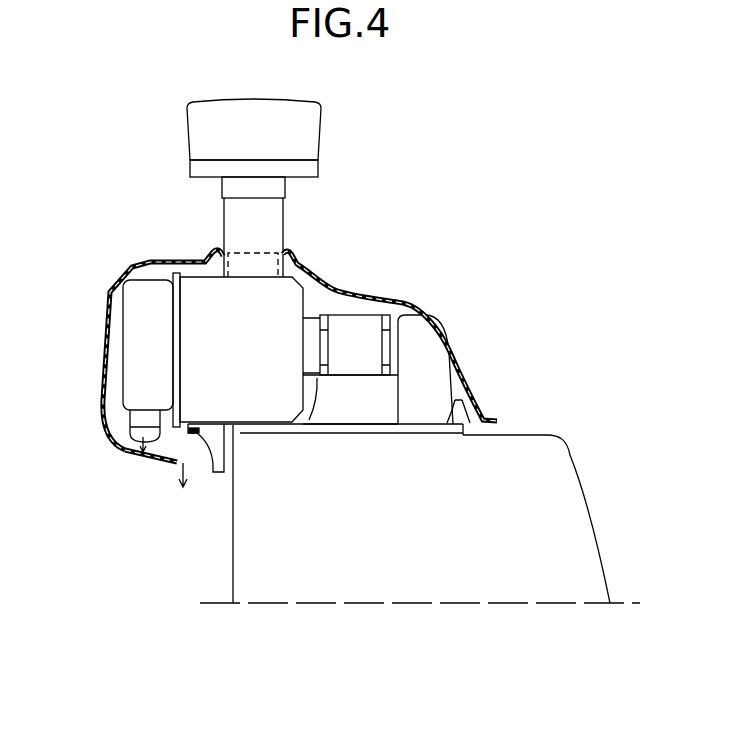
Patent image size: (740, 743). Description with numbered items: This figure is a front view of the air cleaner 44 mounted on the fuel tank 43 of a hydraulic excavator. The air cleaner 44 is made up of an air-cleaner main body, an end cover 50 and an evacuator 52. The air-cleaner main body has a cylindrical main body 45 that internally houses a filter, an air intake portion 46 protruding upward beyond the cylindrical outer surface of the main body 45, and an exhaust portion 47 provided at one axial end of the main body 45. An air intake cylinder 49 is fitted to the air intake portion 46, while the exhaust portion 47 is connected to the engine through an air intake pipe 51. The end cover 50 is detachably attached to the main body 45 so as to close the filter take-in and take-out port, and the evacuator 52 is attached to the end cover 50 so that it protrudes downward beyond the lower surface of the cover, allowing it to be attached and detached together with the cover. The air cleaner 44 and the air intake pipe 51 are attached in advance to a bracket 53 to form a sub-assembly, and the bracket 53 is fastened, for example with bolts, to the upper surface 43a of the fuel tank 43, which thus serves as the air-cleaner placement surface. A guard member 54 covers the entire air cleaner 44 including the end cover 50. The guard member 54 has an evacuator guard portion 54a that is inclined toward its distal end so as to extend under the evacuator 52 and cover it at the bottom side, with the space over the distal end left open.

The fuel tank 43 is at (232, 580).
The upper surface of the fuel tank 43a is at (513, 433).
The air cleaner 44 is at (288, 376).
The main body 45 is at (210, 285).
The air intake portion 46 is at (265, 252).
The exhaust portion 47 is at (305, 410).
The air intake cylinder 49 is at (319, 147).
The end cover 50 is at (122, 308).
The air intake pipe 51 is at (443, 347).
The evacuator 52 is at (124, 455).
The bracket 53 is at (381, 433).
The guard member 54 is at (132, 267).
The evacuator guard portion 54a is at (165, 458).